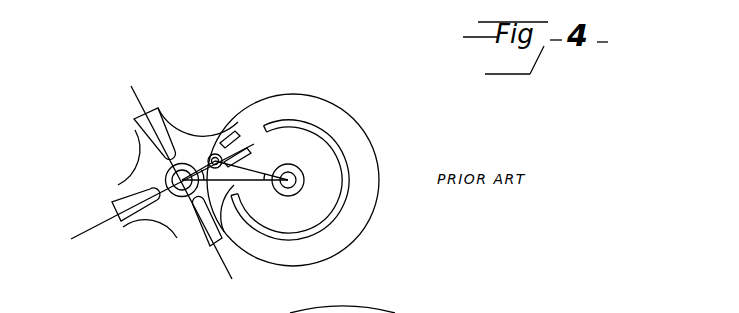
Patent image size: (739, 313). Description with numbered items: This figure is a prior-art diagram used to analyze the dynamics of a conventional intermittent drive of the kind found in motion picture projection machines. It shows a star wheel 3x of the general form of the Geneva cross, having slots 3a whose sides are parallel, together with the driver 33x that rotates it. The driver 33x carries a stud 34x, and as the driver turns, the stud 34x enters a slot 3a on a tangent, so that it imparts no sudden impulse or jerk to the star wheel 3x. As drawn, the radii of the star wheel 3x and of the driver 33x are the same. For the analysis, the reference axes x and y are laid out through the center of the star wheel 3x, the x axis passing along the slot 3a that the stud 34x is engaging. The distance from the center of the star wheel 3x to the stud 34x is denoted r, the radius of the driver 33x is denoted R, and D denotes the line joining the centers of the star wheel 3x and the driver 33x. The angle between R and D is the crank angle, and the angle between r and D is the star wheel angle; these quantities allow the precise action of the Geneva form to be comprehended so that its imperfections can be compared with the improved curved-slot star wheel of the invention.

The star wheel 3x is at (177, 137).
The slot 3a is at (153, 142).
The driver 33x is at (325, 122).
The stud 34x is at (218, 154).
The x axis x is at (160, 192).
The y axis y is at (178, 184).
The distance from center of star wheel to stud r is at (200, 170).
The radius of the driver R is at (252, 168).
The line joining the centers D is at (247, 181).